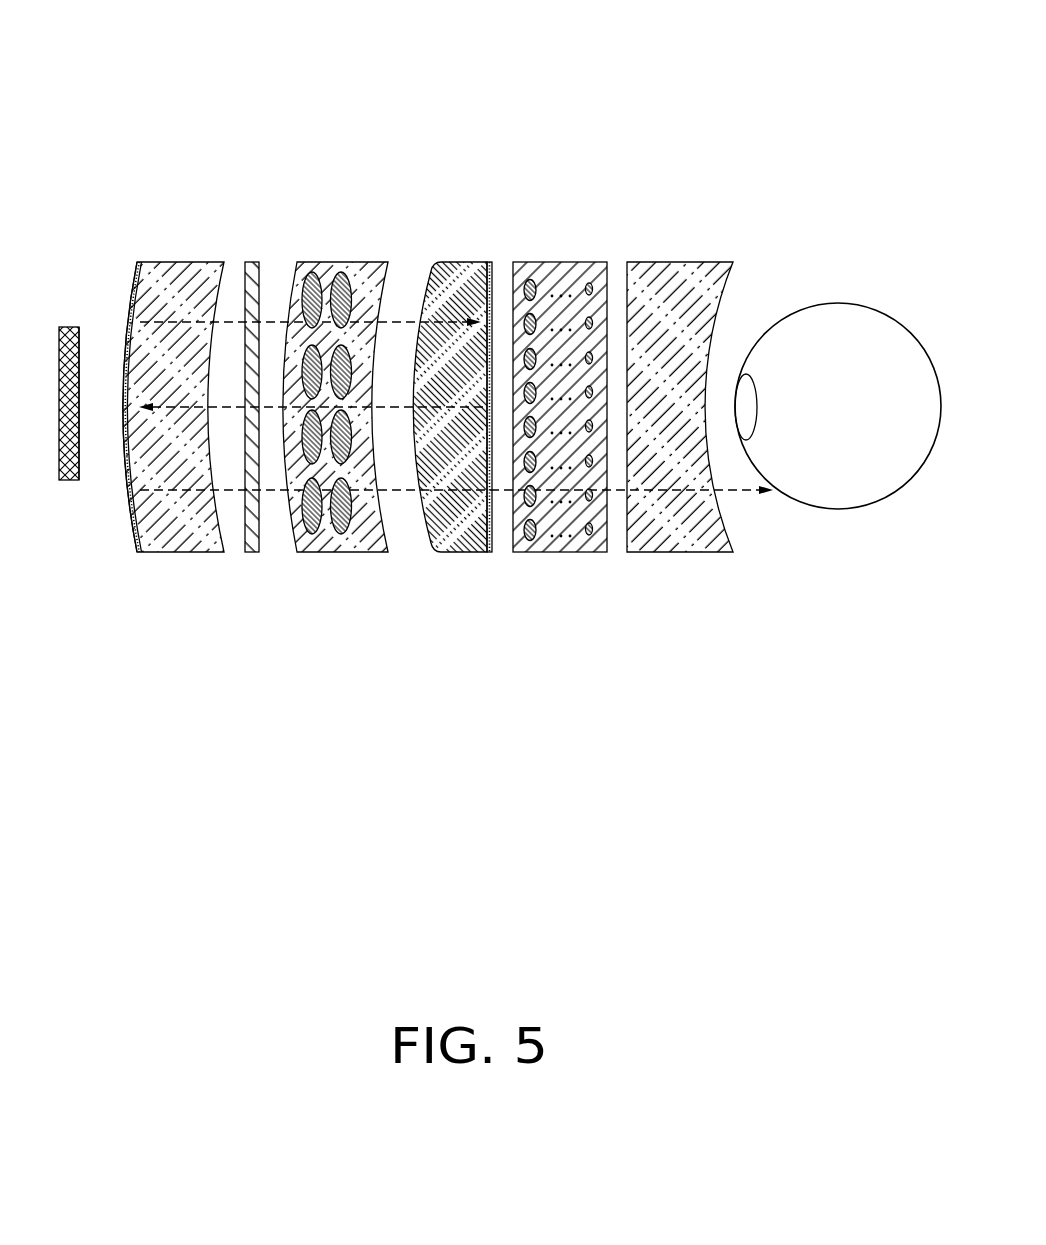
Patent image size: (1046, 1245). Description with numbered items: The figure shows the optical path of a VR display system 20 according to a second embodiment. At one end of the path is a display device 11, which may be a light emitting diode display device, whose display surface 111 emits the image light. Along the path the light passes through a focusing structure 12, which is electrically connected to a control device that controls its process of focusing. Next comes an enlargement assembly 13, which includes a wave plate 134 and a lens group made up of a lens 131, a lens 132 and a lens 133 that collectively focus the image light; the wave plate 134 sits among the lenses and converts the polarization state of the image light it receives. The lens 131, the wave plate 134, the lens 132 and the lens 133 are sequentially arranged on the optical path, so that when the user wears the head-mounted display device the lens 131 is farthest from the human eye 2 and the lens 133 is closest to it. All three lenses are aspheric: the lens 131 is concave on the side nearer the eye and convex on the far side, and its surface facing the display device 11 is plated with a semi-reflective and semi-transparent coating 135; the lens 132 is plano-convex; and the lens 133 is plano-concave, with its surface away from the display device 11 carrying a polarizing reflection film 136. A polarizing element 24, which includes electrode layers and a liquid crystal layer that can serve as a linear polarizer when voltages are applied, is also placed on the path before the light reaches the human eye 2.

The VR display system 20 is at (497, 37).
The display device 11 is at (66, 477).
The display surface 111 is at (82, 400).
The focusing structure 12 is at (332, 535).
The enlargement assembly 13 is at (587, 207).
The lens 131 is at (187, 262).
The lens 132 is at (460, 267).
The lens 133 is at (667, 267).
The wave plate 134 is at (258, 267).
The semi-reflective and semi-transparent coating 135 is at (128, 515).
The polarizing reflection film 136 is at (488, 530).
The polarizing element 24 is at (568, 543).
The human eye 2 is at (865, 508).